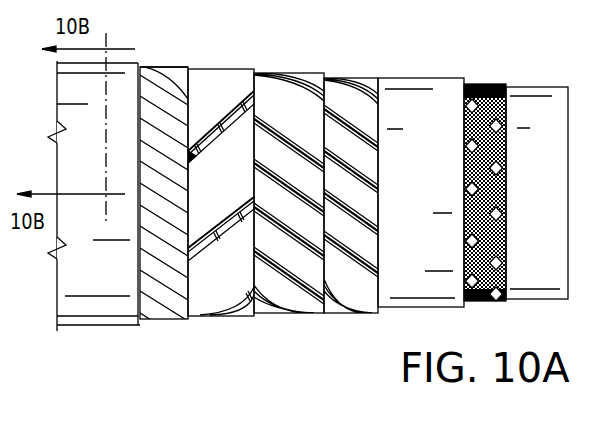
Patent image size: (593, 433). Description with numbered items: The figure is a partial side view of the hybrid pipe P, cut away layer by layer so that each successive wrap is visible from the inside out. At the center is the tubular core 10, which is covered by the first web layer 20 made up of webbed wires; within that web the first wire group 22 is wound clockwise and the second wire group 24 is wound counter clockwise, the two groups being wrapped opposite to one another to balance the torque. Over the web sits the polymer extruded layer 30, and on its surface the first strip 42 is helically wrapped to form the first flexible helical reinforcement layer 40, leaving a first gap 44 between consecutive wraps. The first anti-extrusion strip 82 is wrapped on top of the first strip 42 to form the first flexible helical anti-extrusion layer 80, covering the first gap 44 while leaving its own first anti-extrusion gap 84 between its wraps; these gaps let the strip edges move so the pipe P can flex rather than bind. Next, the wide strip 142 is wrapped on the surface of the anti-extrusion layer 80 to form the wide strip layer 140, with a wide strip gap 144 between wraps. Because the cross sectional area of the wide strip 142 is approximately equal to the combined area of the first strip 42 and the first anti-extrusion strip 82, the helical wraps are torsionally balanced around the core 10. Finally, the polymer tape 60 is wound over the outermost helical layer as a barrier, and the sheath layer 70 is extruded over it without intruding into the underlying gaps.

The tubular core 10 is at (536, 80).
The first web layer 20 is at (440, 232).
The first wire group 22 is at (503, 107).
The second wire group 24 is at (503, 132).
The polymer extruded layer 30 is at (434, 71).
The first flexible helical reinforcement layer 40 is at (359, 187).
The first strip 42 is at (363, 218).
The first gap 44 is at (347, 272).
The polymer tape 60 is at (182, 57).
The sheath layer 70 is at (136, 56).
The first flexible helical anti-extrusion layer 80 is at (289, 199).
The first anti-extrusion strip 82 is at (312, 235).
The first anti-extrusion gap 84 is at (276, 273).
The wide strip layer 140 is at (208, 197).
The wide strip 142 is at (235, 265).
The wide strip gap 144 is at (207, 235).
The hybrid pipe P is at (110, 374).